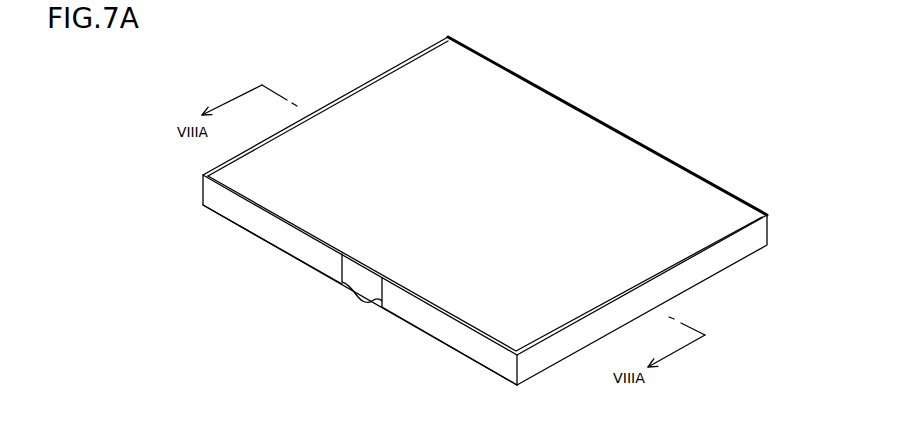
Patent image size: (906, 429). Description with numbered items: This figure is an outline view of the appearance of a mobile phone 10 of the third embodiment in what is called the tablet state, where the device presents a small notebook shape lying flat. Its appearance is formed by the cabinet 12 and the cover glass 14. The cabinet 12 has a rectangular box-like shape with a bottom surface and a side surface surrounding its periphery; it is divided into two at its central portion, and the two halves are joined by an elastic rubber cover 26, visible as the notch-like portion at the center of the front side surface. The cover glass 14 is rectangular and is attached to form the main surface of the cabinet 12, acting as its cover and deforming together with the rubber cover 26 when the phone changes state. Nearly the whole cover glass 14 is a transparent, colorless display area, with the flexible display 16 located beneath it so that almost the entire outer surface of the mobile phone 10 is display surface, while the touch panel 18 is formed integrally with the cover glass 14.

The mobile phone 10 is at (301, 52).
The cabinet 12 is at (267, 232).
The cover glass 14 is at (715, 205).
The flexible display 16 is at (627, 185).
The touch panel 18 is at (555, 133).
The rubber cover 26 is at (357, 283).